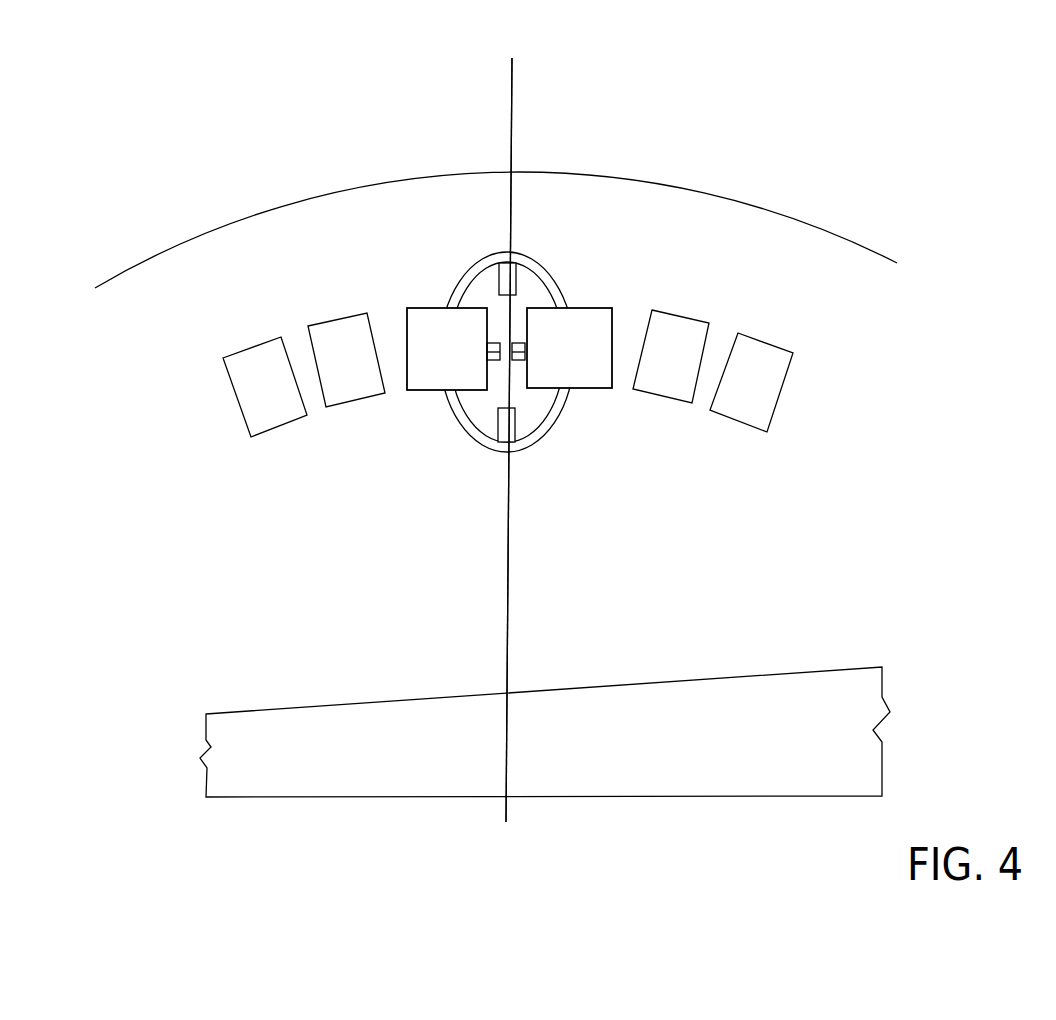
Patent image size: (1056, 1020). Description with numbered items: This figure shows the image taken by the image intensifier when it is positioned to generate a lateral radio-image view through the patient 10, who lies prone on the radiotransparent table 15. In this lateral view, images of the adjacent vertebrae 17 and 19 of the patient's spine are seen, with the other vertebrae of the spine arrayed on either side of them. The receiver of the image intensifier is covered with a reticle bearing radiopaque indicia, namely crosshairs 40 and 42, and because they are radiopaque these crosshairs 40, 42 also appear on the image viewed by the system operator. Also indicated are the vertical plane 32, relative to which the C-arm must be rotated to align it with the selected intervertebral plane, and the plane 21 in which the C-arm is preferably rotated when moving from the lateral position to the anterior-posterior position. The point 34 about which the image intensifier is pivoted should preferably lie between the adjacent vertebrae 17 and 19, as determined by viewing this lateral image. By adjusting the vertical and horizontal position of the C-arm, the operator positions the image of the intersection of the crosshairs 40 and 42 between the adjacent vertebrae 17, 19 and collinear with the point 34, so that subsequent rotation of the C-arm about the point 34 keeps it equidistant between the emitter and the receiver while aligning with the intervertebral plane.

The patient 10 is at (786, 147).
The radiotransparent table 15 is at (716, 777).
The vertebra 17 is at (428, 337).
The vertebra 19 is at (585, 323).
The plane 21 is at (545, 459).
The vertical plane 32 is at (515, 459).
The point 34 is at (506, 362).
The crosshair 40 is at (498, 277).
The crosshair 42 is at (511, 368).